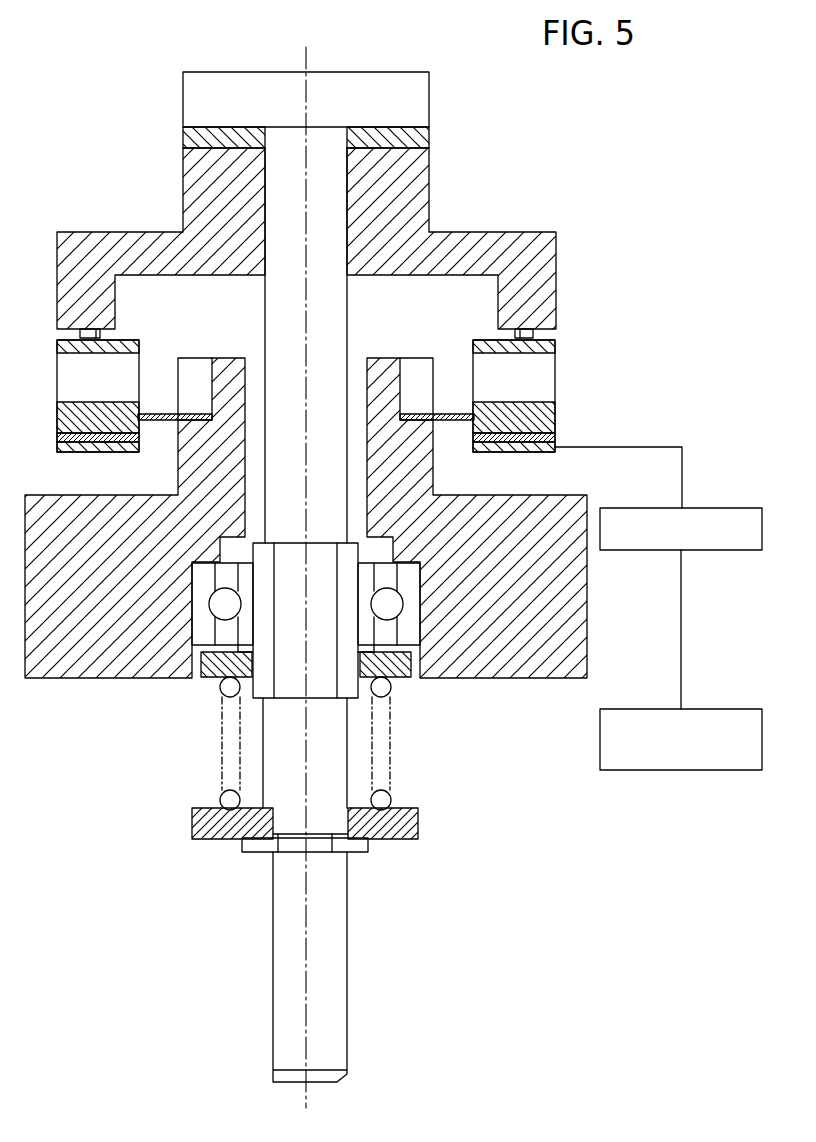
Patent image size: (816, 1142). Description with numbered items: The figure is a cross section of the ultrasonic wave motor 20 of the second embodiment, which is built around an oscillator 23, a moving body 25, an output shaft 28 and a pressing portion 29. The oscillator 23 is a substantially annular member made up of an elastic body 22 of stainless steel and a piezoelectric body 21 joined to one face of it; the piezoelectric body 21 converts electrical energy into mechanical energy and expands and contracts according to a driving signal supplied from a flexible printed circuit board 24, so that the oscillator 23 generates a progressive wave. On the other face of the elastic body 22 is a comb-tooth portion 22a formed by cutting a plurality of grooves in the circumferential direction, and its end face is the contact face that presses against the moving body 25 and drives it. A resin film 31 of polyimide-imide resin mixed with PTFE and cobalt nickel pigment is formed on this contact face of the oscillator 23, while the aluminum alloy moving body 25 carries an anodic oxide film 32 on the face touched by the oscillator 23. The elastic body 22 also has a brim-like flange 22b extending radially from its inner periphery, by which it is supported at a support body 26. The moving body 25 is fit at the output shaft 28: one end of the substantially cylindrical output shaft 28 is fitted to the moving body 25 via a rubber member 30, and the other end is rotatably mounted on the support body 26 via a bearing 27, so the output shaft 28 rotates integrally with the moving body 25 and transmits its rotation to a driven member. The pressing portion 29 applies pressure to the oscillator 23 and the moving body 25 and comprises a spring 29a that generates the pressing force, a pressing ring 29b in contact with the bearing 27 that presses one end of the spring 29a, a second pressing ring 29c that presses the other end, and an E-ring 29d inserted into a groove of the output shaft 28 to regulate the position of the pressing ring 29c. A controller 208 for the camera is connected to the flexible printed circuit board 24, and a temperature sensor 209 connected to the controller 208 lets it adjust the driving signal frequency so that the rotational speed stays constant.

The ultrasonic wave motor 20 is at (104, 140).
The piezoelectric body 21 is at (557, 437).
The elastic body 22 is at (399, 386).
The comb-tooth portion 22a is at (542, 387).
The flange 22b is at (456, 412).
The oscillator 23 is at (419, 396).
The flexible printed circuit board 24 is at (545, 452).
The moving body 25 is at (531, 242).
The support body 26 is at (580, 590).
The bearing 27 is at (410, 613).
The output shaft 28 is at (325, 178).
The pressing portion 29 is at (360, 756).
The spring 29a is at (385, 750).
The pressing ring 29b is at (402, 672).
The pressing ring 29c is at (413, 823).
The E-ring 29d is at (365, 845).
The rubber member 30 is at (415, 138).
The resin film 31 is at (62, 347).
The anodic oxide film 32 is at (535, 335).
The controller 208 is at (722, 508).
The temperature sensor 209 is at (718, 708).